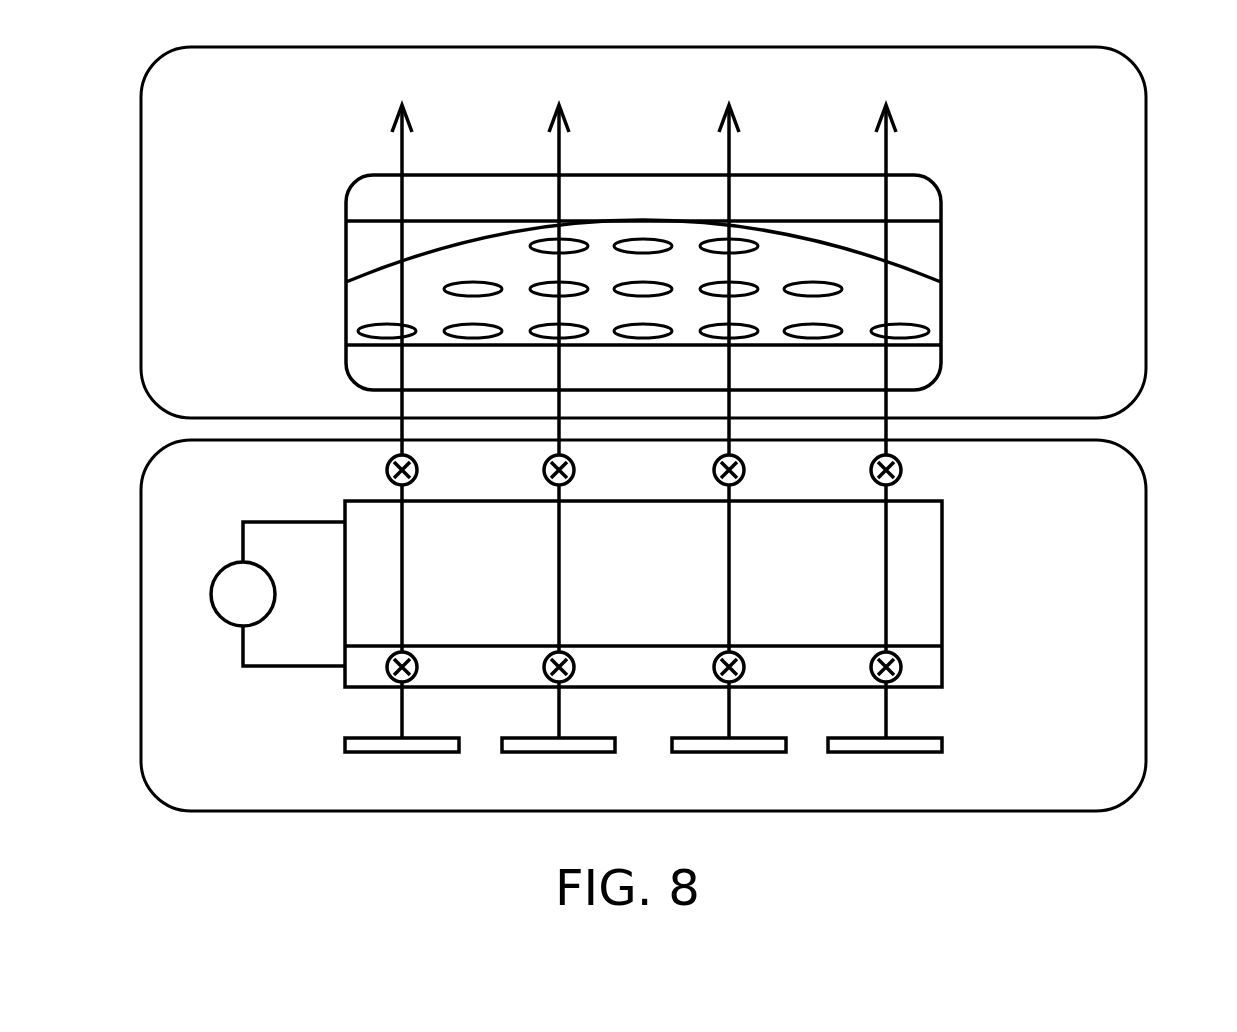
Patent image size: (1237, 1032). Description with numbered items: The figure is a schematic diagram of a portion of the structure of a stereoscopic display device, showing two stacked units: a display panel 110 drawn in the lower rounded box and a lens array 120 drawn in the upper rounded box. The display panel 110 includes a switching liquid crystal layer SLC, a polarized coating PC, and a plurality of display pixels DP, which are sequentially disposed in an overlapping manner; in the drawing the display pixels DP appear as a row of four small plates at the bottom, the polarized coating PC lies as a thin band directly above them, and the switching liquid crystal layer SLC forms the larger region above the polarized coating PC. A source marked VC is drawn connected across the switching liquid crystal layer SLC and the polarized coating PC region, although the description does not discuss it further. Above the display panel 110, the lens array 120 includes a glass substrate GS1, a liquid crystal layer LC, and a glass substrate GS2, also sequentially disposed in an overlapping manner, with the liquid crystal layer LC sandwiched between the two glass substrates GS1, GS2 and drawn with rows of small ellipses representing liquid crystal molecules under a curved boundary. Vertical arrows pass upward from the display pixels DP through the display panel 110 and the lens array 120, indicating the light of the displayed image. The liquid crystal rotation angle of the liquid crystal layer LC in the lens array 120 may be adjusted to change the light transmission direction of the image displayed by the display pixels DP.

The lens array 120 is at (1147, 232).
The display panel 110 is at (1147, 626).
The glass substrate GS1 is at (915, 199).
The glass substrate GS2 is at (915, 372).
The liquid crystal layer LC is at (915, 304).
The switching liquid crystal layer SLC is at (915, 578).
The polarized coating PC is at (915, 668).
The display pixels DP is at (945, 743).
The voltage controller VC is at (278, 594).